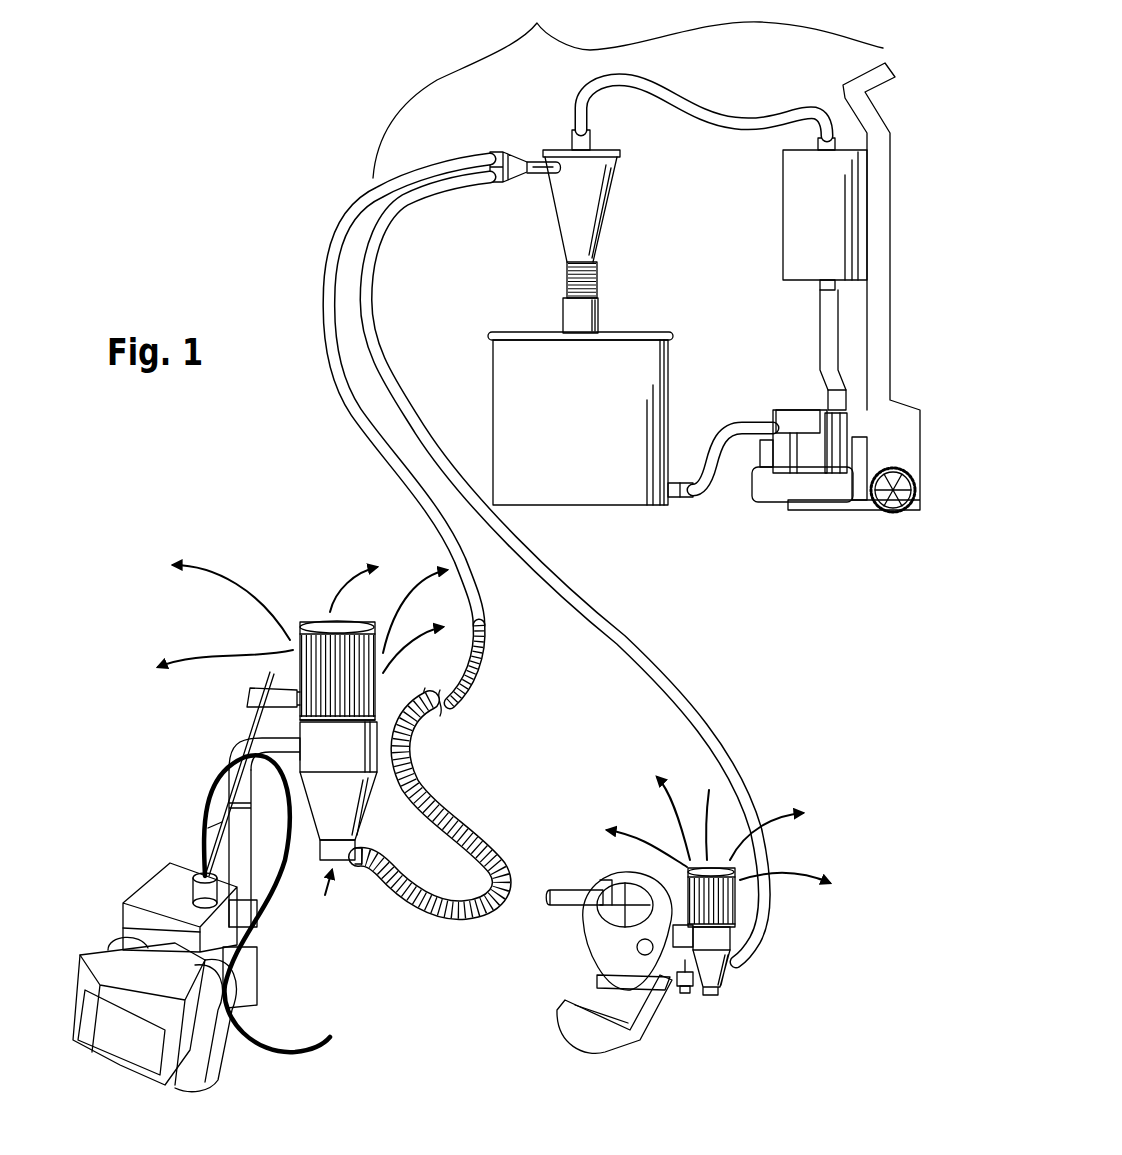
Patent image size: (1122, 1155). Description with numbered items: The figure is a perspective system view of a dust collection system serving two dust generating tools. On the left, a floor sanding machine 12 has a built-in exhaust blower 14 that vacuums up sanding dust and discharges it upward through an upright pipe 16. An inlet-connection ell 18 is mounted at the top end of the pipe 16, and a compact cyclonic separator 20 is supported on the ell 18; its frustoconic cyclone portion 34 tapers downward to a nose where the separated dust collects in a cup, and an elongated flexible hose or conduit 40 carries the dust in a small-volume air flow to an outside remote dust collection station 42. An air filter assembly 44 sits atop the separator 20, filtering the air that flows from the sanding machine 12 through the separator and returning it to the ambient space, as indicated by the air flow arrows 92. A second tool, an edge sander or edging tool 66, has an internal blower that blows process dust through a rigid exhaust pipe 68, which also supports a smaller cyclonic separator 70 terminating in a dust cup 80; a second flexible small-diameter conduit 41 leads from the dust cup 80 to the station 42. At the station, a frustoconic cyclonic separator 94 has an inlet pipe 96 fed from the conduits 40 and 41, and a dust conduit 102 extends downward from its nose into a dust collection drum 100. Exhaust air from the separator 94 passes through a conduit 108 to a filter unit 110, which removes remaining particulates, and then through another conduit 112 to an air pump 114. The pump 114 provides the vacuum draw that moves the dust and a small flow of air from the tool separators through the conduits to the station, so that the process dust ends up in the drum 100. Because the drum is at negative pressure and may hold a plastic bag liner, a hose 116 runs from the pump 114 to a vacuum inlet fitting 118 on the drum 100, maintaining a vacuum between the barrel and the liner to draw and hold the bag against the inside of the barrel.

The floor sanding machine 12 is at (160, 878).
The exhaust blower 14 is at (243, 944).
The upright pipe 16 is at (248, 848).
The inlet-connection ell 18 is at (232, 752).
The cyclonic separator 20 is at (359, 759).
The frustoconic cyclone portion 34 is at (370, 786).
The flexible hose or conduit 40 is at (333, 390).
The second flexible small-diameter conduit 41 is at (424, 368).
The remote dust collection station 42 is at (646, 256).
The air filter assembly 44 is at (297, 624).
The edge sander or edging tool 66 is at (596, 950).
The exhaust pipe 68 is at (697, 977).
The cyclonic separator 70 is at (743, 906).
The dust cup 80 is at (720, 977).
The air flow 92 is at (677, 866).
The cyclonic separator 94 is at (583, 222).
The inlet pipe 96 is at (512, 158).
The dust collection drum 100 is at (670, 350).
The dust conduit 102 is at (602, 282).
The conduit 108 is at (762, 118).
The filter unit 110 is at (787, 225).
The conduit 112 is at (822, 345).
The air pump 114 is at (772, 492).
The hose 116 is at (748, 422).
The vacuum inlet fitting 118 is at (683, 483).